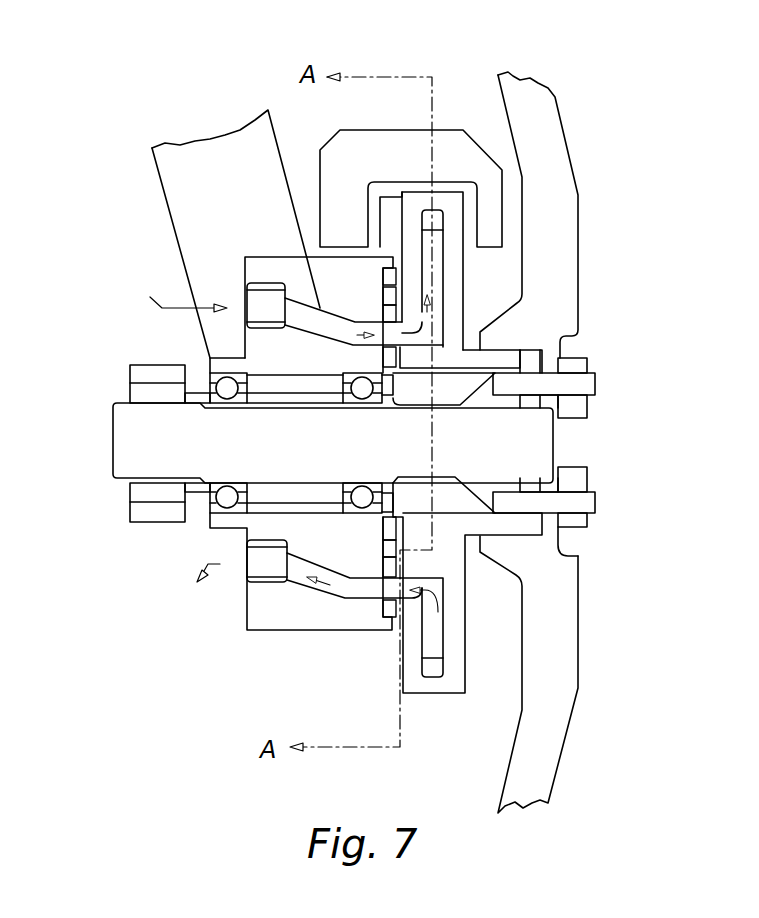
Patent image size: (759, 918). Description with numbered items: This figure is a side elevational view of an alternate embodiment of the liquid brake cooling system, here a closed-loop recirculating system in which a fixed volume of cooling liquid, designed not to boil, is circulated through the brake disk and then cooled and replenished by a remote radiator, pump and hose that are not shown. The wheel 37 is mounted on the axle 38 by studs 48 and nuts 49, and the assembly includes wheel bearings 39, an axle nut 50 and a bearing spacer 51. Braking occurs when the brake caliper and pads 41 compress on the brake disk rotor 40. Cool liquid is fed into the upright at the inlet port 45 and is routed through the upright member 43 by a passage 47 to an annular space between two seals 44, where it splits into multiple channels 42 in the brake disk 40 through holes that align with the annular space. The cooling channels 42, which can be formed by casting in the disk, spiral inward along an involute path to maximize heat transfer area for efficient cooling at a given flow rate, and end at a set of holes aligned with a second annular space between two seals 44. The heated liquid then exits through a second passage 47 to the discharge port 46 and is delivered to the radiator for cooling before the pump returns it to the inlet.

The wheel 37 is at (568, 152).
The axle 38 is at (113, 433).
The wheel bearings 39 is at (372, 513).
The brake disk rotor 40 is at (463, 635).
The brake caliper and pads 41 is at (480, 140).
The cooling channels 42 is at (447, 300).
The upright member 43 is at (257, 632).
The seals 44 is at (385, 627).
The inlet port 45 is at (260, 300).
The discharge port 46 is at (253, 553).
The passage 47 is at (318, 310).
The studs 48 is at (595, 500).
The nuts 49 is at (577, 525).
The axle nut 50 is at (137, 523).
The bearing spacer 51 is at (282, 393).